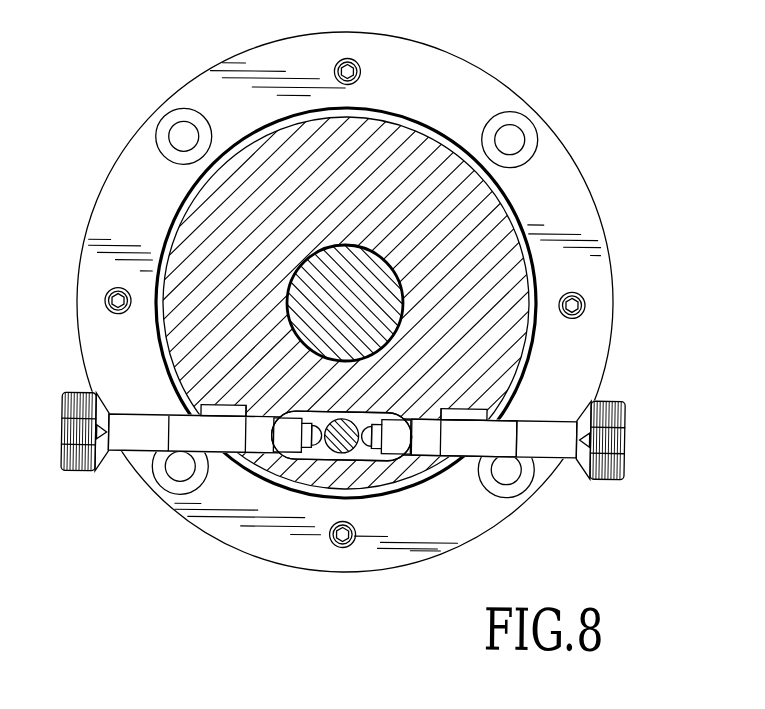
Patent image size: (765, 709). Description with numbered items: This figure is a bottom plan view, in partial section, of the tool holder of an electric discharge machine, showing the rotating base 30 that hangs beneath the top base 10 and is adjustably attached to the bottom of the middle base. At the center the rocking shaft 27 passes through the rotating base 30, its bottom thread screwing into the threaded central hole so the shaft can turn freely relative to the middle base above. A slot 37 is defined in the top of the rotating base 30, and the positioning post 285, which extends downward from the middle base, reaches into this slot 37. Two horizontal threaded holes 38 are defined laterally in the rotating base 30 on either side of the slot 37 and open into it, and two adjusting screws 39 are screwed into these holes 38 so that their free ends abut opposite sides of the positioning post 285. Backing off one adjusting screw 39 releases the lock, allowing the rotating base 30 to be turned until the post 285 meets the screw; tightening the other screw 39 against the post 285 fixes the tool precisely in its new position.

The top base 10 is at (580, 201).
The rotating base 30 is at (507, 285).
The rocking shaft 27 is at (378, 320).
The slot 37 is at (393, 473).
The horizontal threaded holes 38 is at (463, 474).
The adjusting screws 39 is at (343, 463).
The positioning post 285 is at (328, 469).